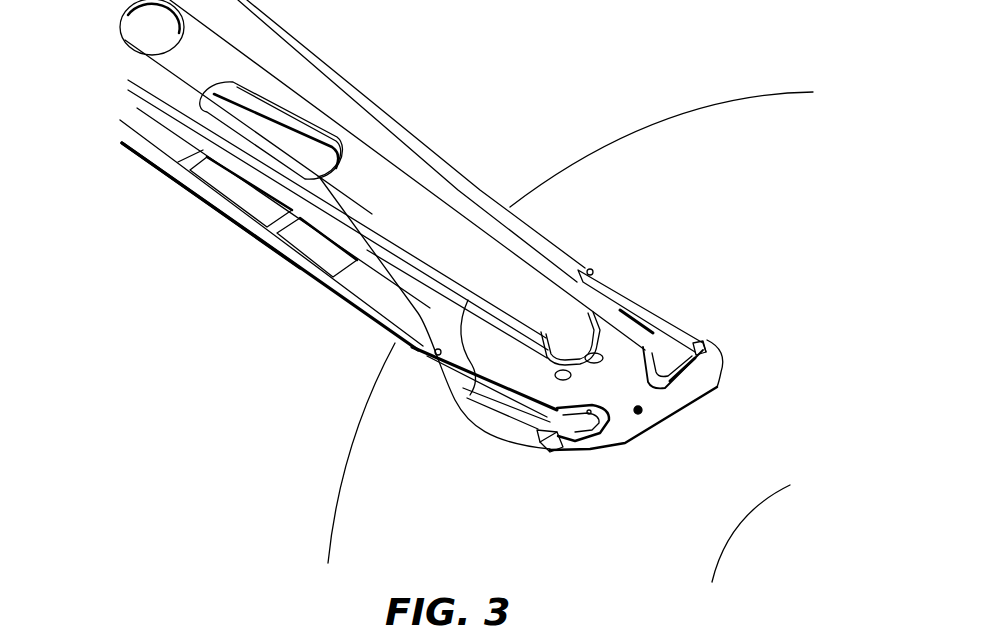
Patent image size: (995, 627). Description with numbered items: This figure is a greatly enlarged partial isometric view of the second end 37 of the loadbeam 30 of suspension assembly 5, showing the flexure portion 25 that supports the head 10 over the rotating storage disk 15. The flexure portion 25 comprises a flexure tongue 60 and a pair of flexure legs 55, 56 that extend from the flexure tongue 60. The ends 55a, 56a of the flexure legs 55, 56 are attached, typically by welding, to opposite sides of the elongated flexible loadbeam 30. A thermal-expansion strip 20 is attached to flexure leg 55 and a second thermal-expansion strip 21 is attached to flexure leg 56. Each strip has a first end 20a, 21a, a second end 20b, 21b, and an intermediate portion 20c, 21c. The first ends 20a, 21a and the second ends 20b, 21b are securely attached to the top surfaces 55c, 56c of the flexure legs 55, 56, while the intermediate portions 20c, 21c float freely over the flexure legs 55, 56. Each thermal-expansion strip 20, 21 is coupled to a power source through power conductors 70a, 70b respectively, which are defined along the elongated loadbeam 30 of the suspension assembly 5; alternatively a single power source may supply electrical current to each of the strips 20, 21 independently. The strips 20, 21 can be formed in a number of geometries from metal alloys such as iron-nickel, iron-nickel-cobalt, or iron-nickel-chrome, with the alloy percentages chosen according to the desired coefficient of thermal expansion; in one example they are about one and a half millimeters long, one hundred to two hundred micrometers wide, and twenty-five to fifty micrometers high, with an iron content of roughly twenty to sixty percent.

The suspension assembly 5 is at (200, 445).
The head 10 is at (545, 452).
The rotating storage disk 15 is at (757, 147).
The thermal-expansion strip 20 is at (470, 387).
The first end of thermal-expansion strip 20a is at (432, 358).
The second end of thermal-expansion strip 20b is at (559, 452).
The intermediate portion of thermal-expansion strip 20c is at (512, 445).
The thermal-expansion strip 21 is at (607, 267).
The first end of thermal-expansion strip 21a is at (595, 268).
The second end of thermal-expansion strip 21b is at (707, 343).
The intermediate portion of thermal-expansion strip 21c is at (653, 319).
The flexure portion 25 is at (632, 190).
The loadbeam 30 is at (393, 127).
The second end of loadbeam 37 is at (570, 310).
The flexure leg 55 is at (392, 343).
The end of flexure leg 55a is at (353, 295).
The top surface of flexure leg 55c is at (490, 432).
The flexure leg 56 is at (530, 213).
The end of flexure leg 56a is at (460, 177).
The top surface of flexure leg 56c is at (628, 312).
The flexure tongue 60 is at (650, 398).
The power conductor 70a is at (365, 212).
The power conductor 70b is at (450, 197).